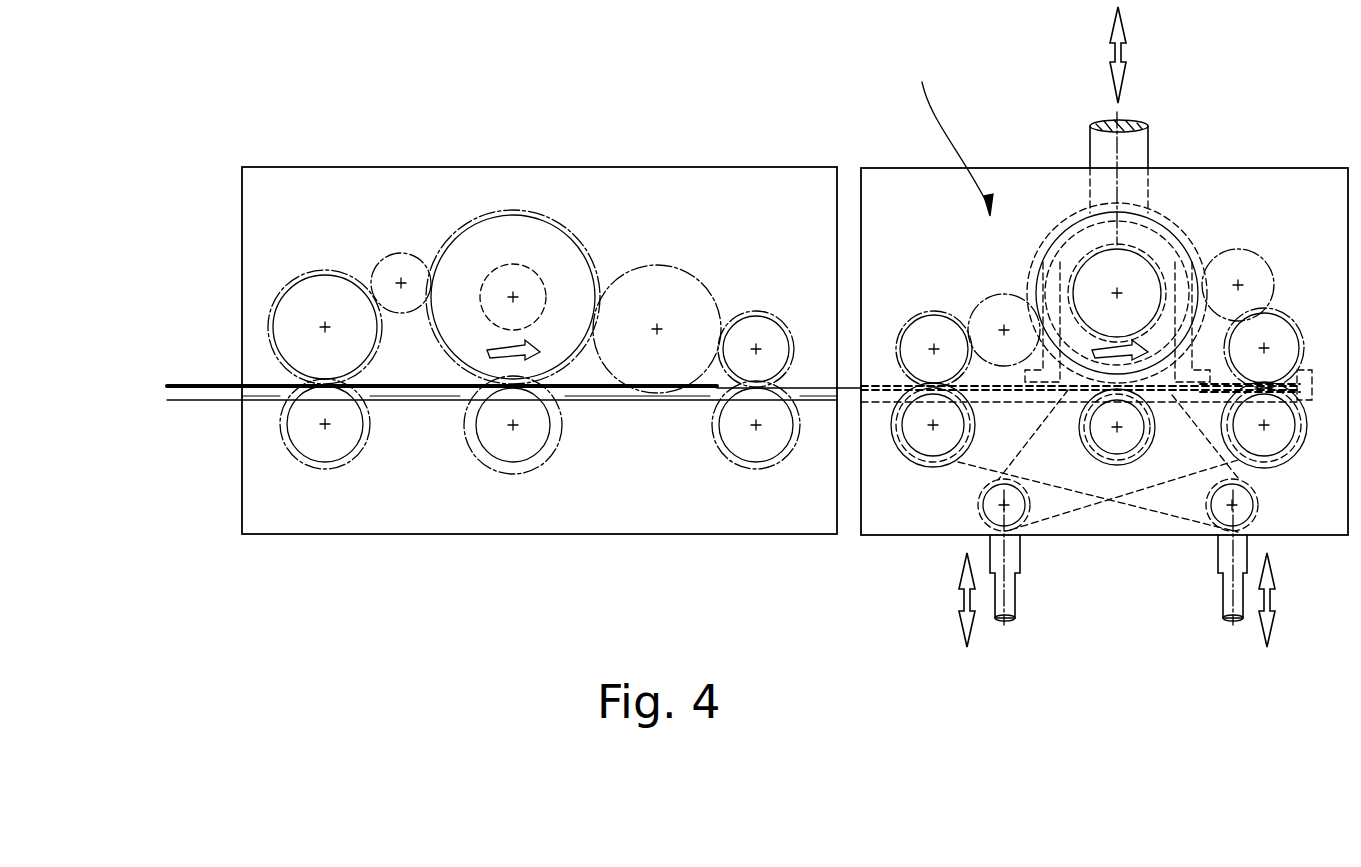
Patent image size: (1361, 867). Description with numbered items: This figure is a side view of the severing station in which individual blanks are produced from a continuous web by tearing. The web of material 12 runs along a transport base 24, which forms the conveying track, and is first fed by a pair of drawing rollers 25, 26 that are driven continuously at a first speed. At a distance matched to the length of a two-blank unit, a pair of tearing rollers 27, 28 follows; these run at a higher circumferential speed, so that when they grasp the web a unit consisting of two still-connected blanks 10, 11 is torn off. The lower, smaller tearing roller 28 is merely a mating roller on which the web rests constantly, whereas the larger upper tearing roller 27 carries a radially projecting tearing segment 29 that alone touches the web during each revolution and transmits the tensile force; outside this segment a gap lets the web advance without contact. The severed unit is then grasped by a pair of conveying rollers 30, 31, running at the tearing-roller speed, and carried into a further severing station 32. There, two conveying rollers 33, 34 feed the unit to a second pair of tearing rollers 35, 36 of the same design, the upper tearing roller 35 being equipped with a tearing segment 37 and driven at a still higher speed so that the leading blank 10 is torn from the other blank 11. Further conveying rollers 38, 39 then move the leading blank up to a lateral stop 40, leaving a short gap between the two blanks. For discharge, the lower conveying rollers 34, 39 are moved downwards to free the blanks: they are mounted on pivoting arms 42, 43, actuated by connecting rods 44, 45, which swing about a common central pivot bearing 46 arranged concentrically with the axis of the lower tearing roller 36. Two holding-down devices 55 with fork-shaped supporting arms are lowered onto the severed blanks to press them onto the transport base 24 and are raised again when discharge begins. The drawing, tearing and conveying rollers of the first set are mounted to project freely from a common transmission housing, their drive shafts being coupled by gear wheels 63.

The blank 10 is at (600, 393).
The blank 11 is at (427, 390).
The web of material 12 is at (195, 384).
The transport base 24 is at (210, 400).
The drawing roller 25 is at (317, 283).
The drawing roller 26 is at (330, 452).
The tearing roller 27 is at (532, 233).
The tearing roller 28 is at (520, 445).
The tearing segment 29 is at (468, 223).
The conveying roller 30 is at (762, 332).
The conveying roller 31 is at (750, 453).
The severing station 32 is at (950, 133).
The conveying roller 33 is at (930, 330).
The conveying roller 34 is at (915, 448).
The tearing roller 35 is at (1193, 250).
The tearing roller 36 is at (1113, 460).
The tearing segment 37 is at (1213, 300).
The conveying roller 38 is at (1260, 323).
The conveying roller 39 is at (1278, 457).
The lateral stop 40 is at (1310, 385).
The pivoting arm 42 is at (972, 468).
The pivoting arm 43 is at (1070, 513).
The connecting rod 44 is at (998, 613).
The connecting rod 45 is at (1222, 600).
The pivot bearing 46 is at (1140, 445).
The holding-down device 55 is at (1142, 145).
The gear wheel 63 is at (402, 260).